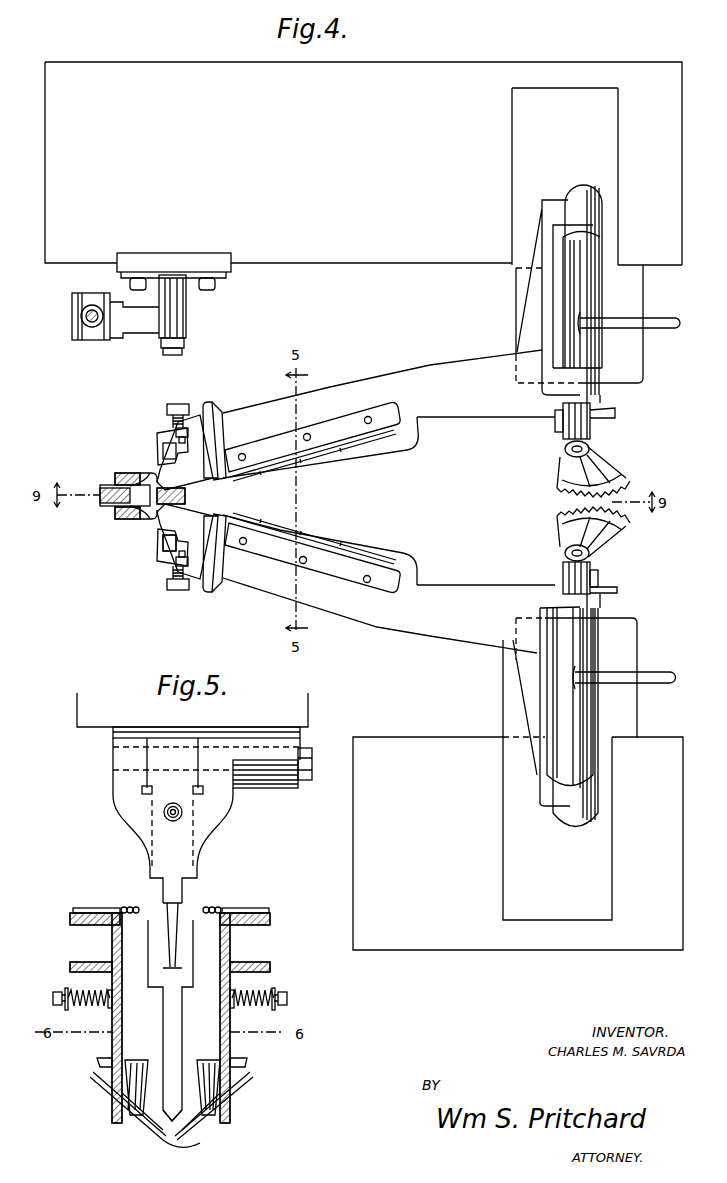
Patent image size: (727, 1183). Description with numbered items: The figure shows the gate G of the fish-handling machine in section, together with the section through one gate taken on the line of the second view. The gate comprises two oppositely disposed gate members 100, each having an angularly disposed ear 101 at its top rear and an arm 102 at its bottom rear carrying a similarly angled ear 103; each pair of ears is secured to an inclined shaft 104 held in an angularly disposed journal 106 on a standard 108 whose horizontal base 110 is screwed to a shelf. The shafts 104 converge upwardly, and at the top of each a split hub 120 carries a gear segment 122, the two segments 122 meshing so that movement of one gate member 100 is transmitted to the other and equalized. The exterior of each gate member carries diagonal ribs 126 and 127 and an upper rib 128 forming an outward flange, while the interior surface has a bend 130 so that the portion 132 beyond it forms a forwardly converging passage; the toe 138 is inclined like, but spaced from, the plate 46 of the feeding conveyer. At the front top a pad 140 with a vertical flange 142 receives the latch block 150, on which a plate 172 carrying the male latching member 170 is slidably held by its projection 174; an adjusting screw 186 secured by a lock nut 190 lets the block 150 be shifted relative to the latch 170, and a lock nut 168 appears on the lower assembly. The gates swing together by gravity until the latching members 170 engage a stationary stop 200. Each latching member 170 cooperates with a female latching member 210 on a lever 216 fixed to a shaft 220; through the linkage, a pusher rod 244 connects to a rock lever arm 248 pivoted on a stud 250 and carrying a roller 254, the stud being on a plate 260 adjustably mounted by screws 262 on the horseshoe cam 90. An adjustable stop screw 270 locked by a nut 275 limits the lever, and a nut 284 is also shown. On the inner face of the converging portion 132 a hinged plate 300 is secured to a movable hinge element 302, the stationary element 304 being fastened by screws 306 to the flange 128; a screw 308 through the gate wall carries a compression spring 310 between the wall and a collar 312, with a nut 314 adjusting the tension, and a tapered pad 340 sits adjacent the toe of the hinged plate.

In FIG. 5, the plate 46 is at (188, 1142).
In FIG. 4, the horse-shoe-shaped cam 90 is at (378, 255).
In FIG. 4, the gate member 100 is at (465, 425).
In FIG. 5, the gate member 100 is at (112, 1039).
In FIG. 4, the ear 101 is at (600, 397).
In FIG. 4, the arm 102 is at (530, 315).
In FIG. 4, the ear 103 is at (598, 216).
In FIG. 4, the shaft 104 is at (565, 449).
In FIG. 4, the journal 106 is at (598, 302).
In FIG. 4, the standard 108 is at (667, 329).
In FIG. 4, the base 110 is at (641, 383).
In FIG. 4, the split hub 120 is at (590, 433).
In FIG. 4, the gear segment 122 is at (621, 485).
In FIG. 5, the rib 126 is at (70, 966).
In FIG. 5, the rib 127 is at (240, 1065).
In FIG. 4, the rib 128 is at (452, 366).
In FIG. 5, the rib 128 is at (70, 919).
In FIG. 4, the bend 130 is at (415, 415).
In FIG. 4, the portion 132 is at (323, 387).
In FIG. 5, the toe 138 is at (175, 1100).
In FIG. 4, the pad 140 is at (223, 413).
In FIG. 4, the vertical flange 142 is at (208, 402).
In FIG. 4, the latch block 150 is at (185, 497).
In FIG. 4, the lock nut 168 is at (170, 553).
In FIG. 4, the male latching member 170 is at (135, 515).
In FIG. 5, the male latching member 170 is at (196, 895).
In FIG. 4, the plate 172 is at (157, 437).
In FIG. 4, the projection 174 is at (176, 404).
In FIG. 4, the adjusting screw 186 is at (163, 452).
In FIG. 4, the lock nut 190 is at (176, 430).
In FIG. 4, the stop 200 is at (186, 495).
In FIG. 4, the female latching member 210 is at (150, 520).
In FIG. 4, the lever 216 is at (100, 493).
In FIG. 5, the shaft 220 is at (296, 779).
In FIG. 4, the pusher rod 244 is at (80, 316).
In FIG. 4, the rock lever arm 248 is at (140, 316).
In FIG. 4, the stud 250 is at (182, 355).
In FIG. 4, the roller 254 is at (74, 340).
In FIG. 4, the plate 260 is at (231, 268).
In FIG. 4, the screws 262 is at (208, 290).
In FIG. 5, the stop screw 270 is at (185, 808).
In FIG. 5, the nut 275 is at (160, 807).
In FIG. 4, the nut 284 is at (108, 484).
In FIG. 5, the hinged plate 300 is at (123, 1017).
In FIG. 4, the movable hinge element 302 is at (328, 449).
In FIG. 5, the movable hinge element 302 is at (128, 907).
In FIG. 4, the stationary hinge element 304 is at (314, 425).
In FIG. 5, the stationary hinge element 304 is at (110, 908).
In FIG. 4, the screws 306 is at (369, 416).
In FIG. 5, the screw 308 is at (58, 997).
In FIG. 5, the compression spring 310 is at (95, 1006).
In FIG. 5, the collar 312 is at (106, 1002).
In FIG. 5, the nut 314 is at (68, 986).
In FIG. 5, the pad 340 is at (197, 1070).